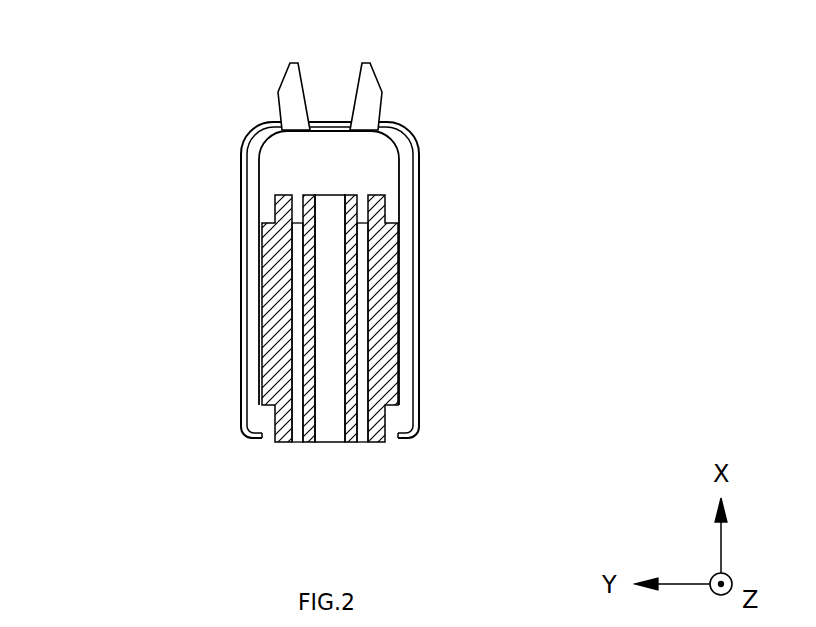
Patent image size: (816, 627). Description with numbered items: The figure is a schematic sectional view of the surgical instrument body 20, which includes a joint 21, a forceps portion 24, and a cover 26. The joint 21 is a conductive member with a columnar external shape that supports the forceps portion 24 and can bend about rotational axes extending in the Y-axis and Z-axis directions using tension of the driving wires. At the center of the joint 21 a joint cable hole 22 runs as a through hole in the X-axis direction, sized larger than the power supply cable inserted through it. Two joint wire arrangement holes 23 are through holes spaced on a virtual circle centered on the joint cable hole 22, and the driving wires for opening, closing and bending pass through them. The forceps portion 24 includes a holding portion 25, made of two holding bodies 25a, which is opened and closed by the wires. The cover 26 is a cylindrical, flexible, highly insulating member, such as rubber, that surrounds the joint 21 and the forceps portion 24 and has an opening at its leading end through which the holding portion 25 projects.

The surgical instrument body 20 is at (256, 263).
The joint 21 is at (399, 328).
The joint cable hole 22 is at (316, 427).
The joint wire arrangement holes 23 is at (297, 432).
The forceps portion 24 is at (399, 152).
The holding portion 25 is at (330, 81).
The holding body 25a is at (288, 73).
The cover 26 is at (241, 293).